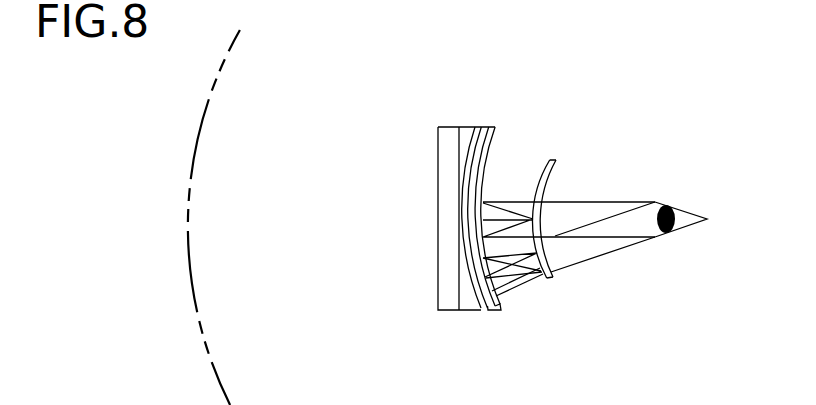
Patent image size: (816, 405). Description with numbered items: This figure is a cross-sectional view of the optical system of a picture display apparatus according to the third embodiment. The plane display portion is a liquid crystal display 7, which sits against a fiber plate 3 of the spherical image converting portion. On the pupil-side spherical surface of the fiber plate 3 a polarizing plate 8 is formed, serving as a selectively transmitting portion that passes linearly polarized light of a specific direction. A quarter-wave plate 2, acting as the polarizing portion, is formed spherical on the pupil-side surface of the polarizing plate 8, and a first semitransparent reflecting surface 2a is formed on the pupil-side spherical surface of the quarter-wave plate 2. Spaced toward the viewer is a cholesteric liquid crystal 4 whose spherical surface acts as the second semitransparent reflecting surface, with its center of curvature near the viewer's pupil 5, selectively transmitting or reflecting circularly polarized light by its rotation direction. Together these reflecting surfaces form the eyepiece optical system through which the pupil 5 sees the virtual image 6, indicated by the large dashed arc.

The quarter-wave plate 2 is at (520, 177).
The first semitransparent reflecting surface 2a is at (489, 167).
The fiber plate 3 is at (472, 135).
The cholesteric liquid crystal 4 is at (555, 160).
The pupil 5 is at (678, 233).
The virtual image 6 is at (213, 377).
The liquid crystal display (LCD) 7 is at (447, 125).
The polarizing plate 8 is at (488, 128).